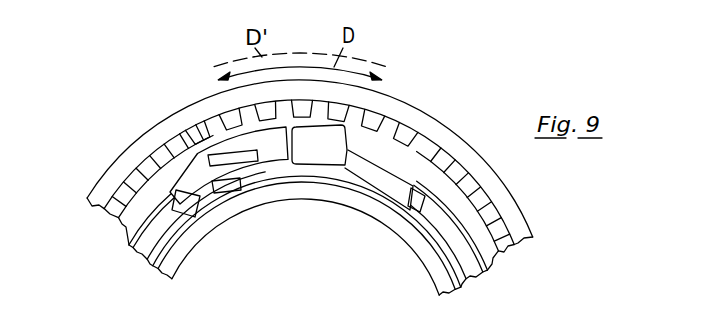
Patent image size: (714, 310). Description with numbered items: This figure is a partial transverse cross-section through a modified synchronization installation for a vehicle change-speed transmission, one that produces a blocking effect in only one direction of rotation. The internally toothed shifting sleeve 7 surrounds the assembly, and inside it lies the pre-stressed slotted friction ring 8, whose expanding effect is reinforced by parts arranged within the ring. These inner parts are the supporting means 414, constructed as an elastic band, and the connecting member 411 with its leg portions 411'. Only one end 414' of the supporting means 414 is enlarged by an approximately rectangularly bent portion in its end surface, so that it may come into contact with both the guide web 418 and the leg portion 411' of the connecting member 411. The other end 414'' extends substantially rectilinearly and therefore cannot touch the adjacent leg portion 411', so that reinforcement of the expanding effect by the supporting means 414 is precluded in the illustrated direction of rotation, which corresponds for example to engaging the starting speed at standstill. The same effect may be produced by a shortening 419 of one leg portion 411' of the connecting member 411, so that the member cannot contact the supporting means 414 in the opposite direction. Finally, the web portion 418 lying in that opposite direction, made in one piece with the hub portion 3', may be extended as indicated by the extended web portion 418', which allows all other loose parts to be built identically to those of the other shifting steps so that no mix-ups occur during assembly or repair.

The shifting sleeve 7 is at (387, 110).
The friction ring 8 is at (478, 233).
The guide web 418 is at (311, 174).
The extended web portion 418' is at (168, 165).
The connecting member 411 is at (352, 167).
The leg portion 411' is at (307, 232).
The shortening 419 is at (242, 185).
The enlarged end of supporting means 414' is at (206, 228).
The rectilinear end of supporting means 414'' is at (395, 229).
The supporting means 414 is at (308, 239).
The hub portion 3' is at (305, 247).